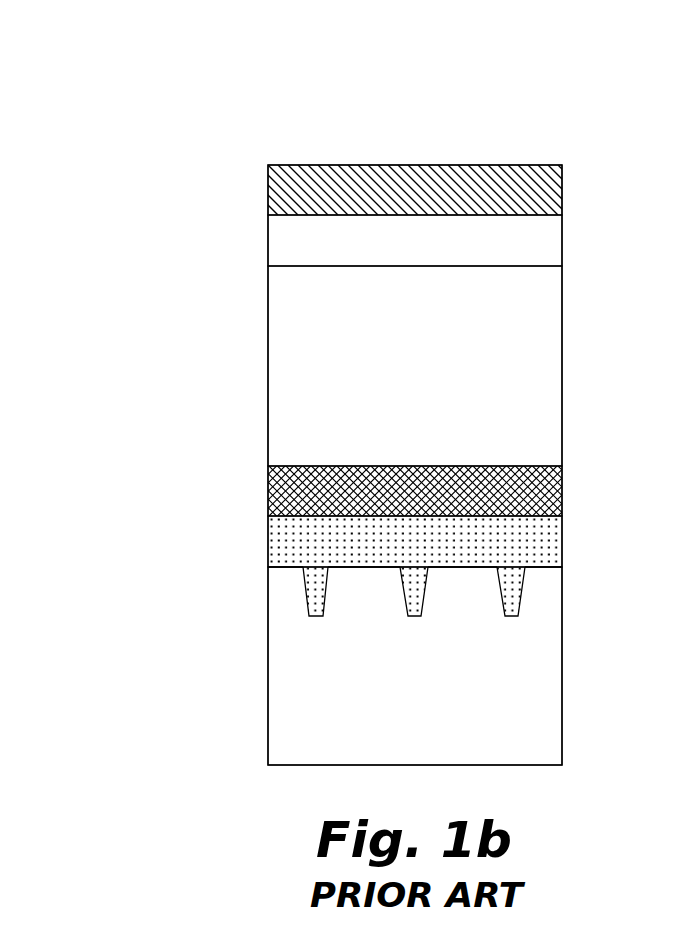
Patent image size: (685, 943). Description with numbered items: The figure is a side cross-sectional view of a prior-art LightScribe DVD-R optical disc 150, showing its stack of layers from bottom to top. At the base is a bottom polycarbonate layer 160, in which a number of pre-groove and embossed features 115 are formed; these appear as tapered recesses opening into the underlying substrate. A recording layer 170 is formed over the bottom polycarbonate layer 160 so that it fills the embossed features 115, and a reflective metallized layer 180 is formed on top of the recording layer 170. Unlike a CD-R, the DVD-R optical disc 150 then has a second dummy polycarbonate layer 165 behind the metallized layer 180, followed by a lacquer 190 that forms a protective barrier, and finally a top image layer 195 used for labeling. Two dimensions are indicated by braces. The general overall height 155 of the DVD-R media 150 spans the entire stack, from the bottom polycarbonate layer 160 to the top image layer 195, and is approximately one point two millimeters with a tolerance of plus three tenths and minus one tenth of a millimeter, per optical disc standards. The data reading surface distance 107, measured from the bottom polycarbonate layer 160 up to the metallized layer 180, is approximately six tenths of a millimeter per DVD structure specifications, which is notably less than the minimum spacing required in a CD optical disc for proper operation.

The LightScribe DVD-R optical disc 150 is at (606, 107).
The general overall height 155 is at (180, 165).
The data reading surface distance 107 is at (253, 467).
The top image layer 195 is at (562, 188).
The lacquer 190 is at (562, 243).
The second dummy polycarbonate layer 165 is at (562, 366).
The reflective metallized layer 180 is at (562, 488).
The recording layer 170 is at (562, 541).
The pre-groove and embossed features 115 is at (562, 567).
The bottom polycarbonate layer 160 is at (562, 664).